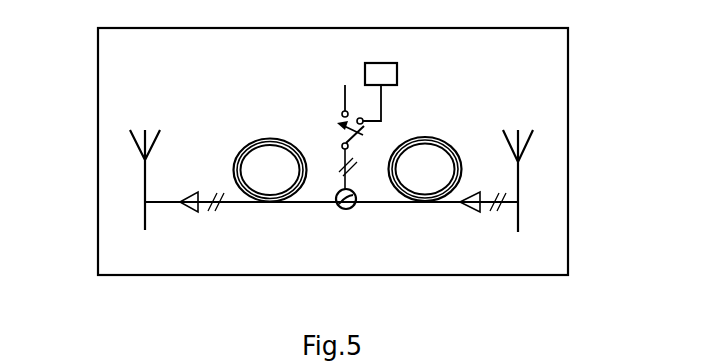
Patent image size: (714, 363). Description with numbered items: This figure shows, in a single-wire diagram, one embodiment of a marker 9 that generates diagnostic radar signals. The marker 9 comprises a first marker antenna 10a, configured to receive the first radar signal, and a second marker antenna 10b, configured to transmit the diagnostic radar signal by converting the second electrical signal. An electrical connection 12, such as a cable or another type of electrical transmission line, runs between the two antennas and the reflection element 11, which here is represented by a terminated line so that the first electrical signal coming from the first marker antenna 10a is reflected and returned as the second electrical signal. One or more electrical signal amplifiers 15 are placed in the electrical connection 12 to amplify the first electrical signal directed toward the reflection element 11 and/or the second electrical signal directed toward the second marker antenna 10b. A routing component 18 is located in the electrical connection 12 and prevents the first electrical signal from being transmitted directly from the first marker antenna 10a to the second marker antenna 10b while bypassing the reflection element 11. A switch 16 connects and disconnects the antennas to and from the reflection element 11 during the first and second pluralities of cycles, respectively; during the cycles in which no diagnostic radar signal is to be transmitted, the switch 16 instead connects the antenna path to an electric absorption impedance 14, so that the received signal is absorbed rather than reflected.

The marker 9 is at (98, 248).
The first marker antenna 10a is at (518, 178).
The second marker antenna 10b is at (145, 178).
The reflection element 11 is at (337, 90).
The electrical connection 12 is at (305, 203).
The electric absorption impedance 14 is at (397, 73).
The electrical signal amplifier 15 is at (185, 206).
The switch 16 is at (323, 130).
The routing component 18 is at (353, 207).